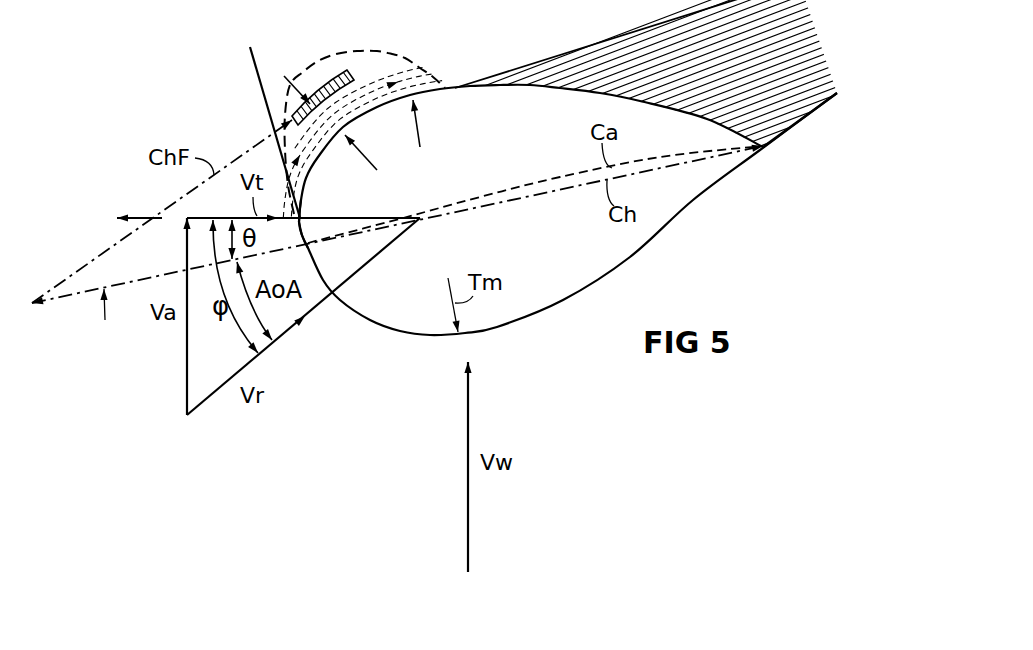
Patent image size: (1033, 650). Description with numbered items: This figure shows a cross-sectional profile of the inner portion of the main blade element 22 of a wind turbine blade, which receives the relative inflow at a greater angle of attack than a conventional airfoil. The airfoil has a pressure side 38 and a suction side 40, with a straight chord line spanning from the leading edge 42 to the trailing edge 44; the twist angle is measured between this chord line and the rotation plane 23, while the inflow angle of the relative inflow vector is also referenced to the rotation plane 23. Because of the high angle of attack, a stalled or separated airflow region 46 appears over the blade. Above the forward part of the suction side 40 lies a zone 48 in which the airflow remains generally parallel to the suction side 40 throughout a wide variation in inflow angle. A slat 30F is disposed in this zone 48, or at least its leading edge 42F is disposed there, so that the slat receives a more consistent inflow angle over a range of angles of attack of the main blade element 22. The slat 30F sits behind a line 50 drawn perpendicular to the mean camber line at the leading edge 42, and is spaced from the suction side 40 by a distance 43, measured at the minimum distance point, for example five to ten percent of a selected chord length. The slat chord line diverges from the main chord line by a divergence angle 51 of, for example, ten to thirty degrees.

The main blade element 22 is at (568, 197).
The rotation plane 23 is at (147, 217).
The slat 30F is at (316, 92).
The pressure side 38 is at (537, 311).
The suction side 40 is at (528, 86).
The leading edge 42 is at (311, 246).
The leading edge of the slat 42F is at (277, 132).
The distance 43 is at (364, 154).
The trailing edge 44 is at (777, 140).
The stalled or separated airflow region 46 is at (672, 35).
The zone 48 is at (400, 54).
The line 50 is at (256, 70).
The divergence angle 51 is at (92, 261).